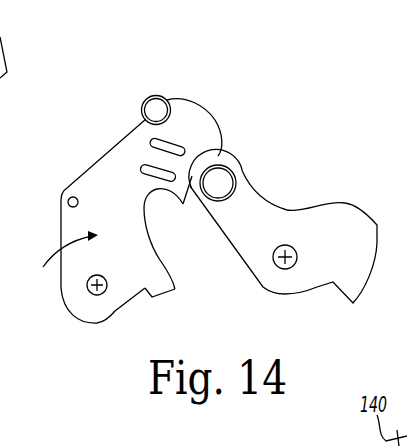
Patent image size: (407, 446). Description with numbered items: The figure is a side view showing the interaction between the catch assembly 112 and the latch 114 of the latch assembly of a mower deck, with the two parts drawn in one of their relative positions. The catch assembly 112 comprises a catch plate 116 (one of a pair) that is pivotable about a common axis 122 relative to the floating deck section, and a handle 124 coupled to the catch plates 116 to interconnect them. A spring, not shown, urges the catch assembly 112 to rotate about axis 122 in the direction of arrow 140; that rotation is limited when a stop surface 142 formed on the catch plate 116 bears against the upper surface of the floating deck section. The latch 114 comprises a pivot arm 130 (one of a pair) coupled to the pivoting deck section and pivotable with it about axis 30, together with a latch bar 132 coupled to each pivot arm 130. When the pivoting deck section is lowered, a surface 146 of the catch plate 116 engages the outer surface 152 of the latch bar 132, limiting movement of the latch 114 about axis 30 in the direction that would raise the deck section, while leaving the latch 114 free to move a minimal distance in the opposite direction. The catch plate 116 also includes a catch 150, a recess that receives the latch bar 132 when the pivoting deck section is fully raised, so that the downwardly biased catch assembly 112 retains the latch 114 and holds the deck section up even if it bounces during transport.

The catch assembly 112 is at (133, 90).
The latch 114 is at (344, 168).
The catch plate 116 is at (83, 174).
The handle 124 is at (157, 95).
The surface 146 is at (208, 101).
The outer surface 152 is at (236, 162).
The latch bar 132 is at (222, 184).
The pivot arm 130 is at (338, 213).
The axis 30 is at (297, 257).
The axis 122 is at (87, 287).
The arrow 140 is at (60, 248).
The stop surface 142 is at (167, 293).
The catch 150 is at (167, 212).